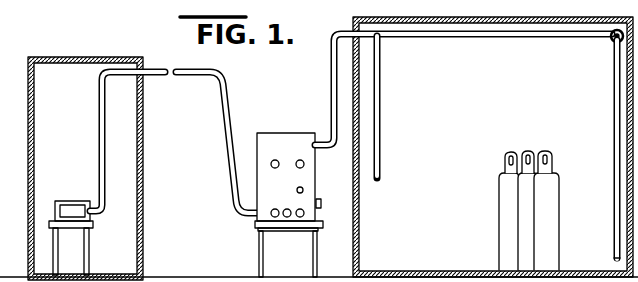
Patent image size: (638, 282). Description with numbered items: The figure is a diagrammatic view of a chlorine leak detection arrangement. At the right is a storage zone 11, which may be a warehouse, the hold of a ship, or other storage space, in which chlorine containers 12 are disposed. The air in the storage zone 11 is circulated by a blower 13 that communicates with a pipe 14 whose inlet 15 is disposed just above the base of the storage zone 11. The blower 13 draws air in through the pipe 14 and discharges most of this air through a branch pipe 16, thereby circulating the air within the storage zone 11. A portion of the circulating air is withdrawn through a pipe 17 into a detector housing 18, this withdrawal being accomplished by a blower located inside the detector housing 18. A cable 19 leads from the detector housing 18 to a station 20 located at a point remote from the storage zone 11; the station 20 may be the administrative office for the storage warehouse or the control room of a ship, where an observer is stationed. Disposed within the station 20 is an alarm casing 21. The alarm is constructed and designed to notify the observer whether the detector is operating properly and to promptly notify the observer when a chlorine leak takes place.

The storage zone 11 is at (493, 147).
The chlorine containers 12 is at (550, 205).
The blower 13 is at (609, 41).
The pipe 14 is at (612, 118).
The inlet 15 is at (614, 259).
The branch pipe 16 is at (382, 125).
The pipe 17 is at (329, 79).
The detector housing 18 is at (300, 133).
The cable 19 is at (227, 143).
The station 20 is at (132, 228).
The alarm casing 21 is at (70, 200).